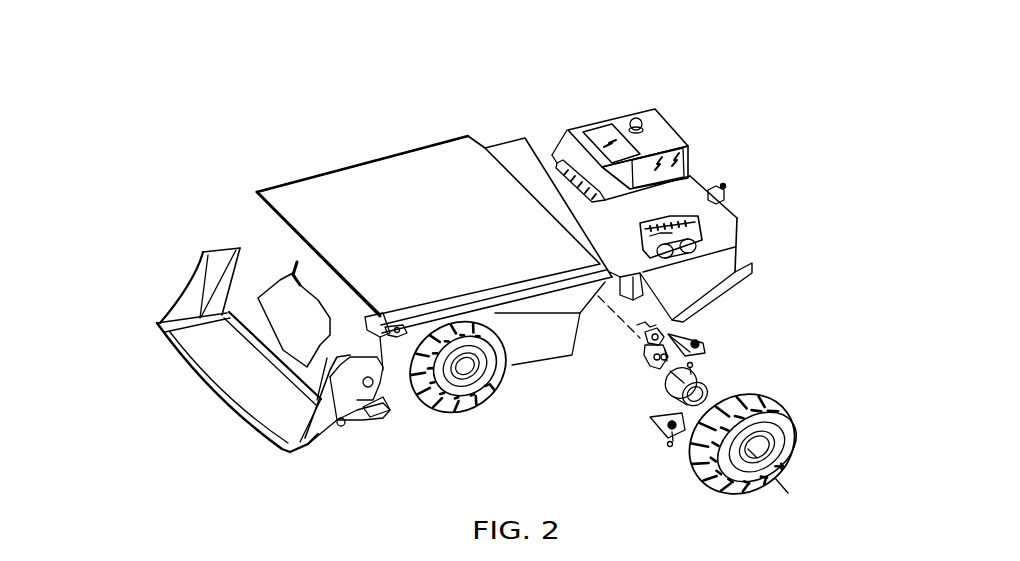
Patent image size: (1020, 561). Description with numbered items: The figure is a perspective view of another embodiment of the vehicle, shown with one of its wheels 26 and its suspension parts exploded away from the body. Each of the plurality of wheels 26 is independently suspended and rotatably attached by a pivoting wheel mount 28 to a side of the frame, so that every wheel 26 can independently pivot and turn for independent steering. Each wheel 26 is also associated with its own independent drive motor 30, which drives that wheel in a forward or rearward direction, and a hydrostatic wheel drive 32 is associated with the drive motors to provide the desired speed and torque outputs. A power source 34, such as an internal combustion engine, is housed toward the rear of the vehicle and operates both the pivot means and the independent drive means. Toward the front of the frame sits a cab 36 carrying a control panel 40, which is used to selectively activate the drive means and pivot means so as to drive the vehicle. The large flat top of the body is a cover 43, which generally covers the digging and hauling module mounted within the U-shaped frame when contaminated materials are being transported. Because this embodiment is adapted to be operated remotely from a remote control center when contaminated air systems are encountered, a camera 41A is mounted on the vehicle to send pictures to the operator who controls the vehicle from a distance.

The wheel 26 is at (793, 430).
The pivoting wheel mount 28 is at (705, 332).
The independent drive motor 30 is at (645, 357).
The hydrostatic wheel drive 32 is at (703, 381).
The power source 34 is at (717, 243).
The cab 36 is at (650, 108).
The control panel 40 is at (553, 158).
The camera 41A is at (726, 195).
The cover 43 is at (257, 192).